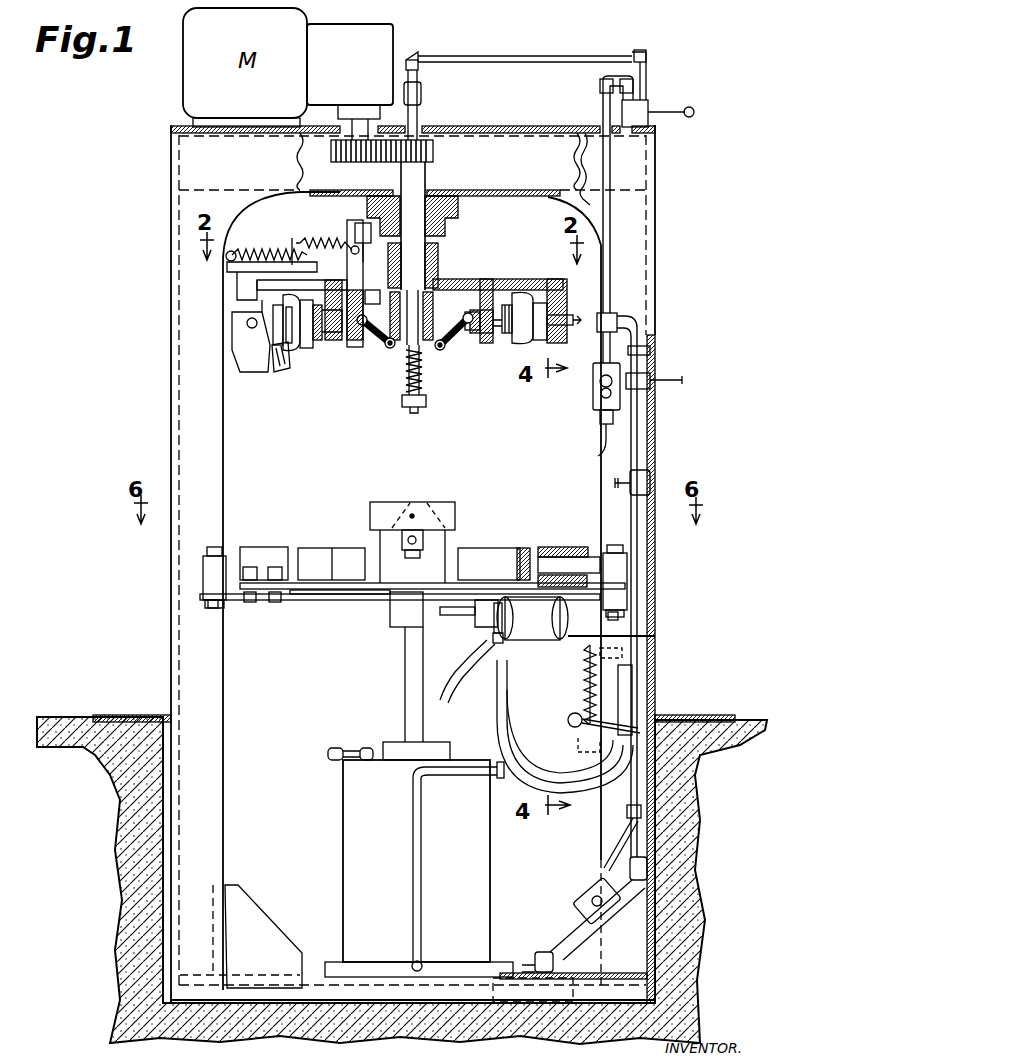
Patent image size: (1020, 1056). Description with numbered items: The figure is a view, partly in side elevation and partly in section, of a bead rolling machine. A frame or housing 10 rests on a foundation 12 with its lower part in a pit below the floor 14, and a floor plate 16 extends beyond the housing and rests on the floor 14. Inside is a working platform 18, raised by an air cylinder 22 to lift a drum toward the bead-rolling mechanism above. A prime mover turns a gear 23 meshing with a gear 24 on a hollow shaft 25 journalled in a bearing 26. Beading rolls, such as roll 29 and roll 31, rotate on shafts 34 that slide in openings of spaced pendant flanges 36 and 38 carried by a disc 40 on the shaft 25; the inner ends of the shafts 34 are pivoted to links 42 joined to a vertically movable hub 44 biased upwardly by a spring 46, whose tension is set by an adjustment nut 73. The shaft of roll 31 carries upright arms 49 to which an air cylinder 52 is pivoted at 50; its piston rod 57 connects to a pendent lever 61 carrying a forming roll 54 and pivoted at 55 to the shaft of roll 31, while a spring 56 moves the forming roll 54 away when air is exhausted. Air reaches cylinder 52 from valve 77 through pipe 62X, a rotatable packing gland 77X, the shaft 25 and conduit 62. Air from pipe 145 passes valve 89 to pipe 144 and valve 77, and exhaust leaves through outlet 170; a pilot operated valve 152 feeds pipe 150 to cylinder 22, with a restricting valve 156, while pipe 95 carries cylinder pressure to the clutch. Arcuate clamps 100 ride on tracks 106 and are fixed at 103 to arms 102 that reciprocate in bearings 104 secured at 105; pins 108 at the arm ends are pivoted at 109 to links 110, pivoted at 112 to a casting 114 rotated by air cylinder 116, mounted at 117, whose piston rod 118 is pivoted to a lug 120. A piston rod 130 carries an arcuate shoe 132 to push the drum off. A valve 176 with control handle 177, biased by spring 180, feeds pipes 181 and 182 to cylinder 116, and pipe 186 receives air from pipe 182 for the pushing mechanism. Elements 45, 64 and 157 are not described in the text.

The frame or housing 10 is at (178, 632).
The foundation 12 is at (68, 730).
The floor 14 is at (88, 717).
The floor plate 16 is at (112, 717).
The working platform 18 is at (360, 596).
The air cylinder 22 is at (384, 855).
The gear 23 is at (342, 150).
The gear 24 is at (421, 140).
The hollow shaft 25 is at (415, 180).
The bearing 26 is at (446, 218).
The beading roll 29 is at (523, 317).
The beading roll 31 is at (307, 322).
The shafts 34 is at (485, 284).
The pendant flange 36 is at (566, 300).
The pendant flange 38 is at (345, 345).
The disc 40 is at (505, 284).
The links 42 is at (375, 345).
The vertically movable hub 44 is at (430, 318).
The roller 45 is at (325, 343).
The spring 46 is at (525, 340).
The upright arms 49 is at (375, 300).
The pivot 50 is at (352, 240).
The air cylinder 52 is at (300, 240).
The forming roll 54 is at (272, 370).
The pivot 55 is at (245, 318).
The spring 56 is at (270, 250).
The piston rod 57 is at (240, 268).
The pendent lever 61 is at (245, 348).
The pipe or conduit 62 is at (438, 253).
The pipe 62X is at (575, 52).
The roller 64 is at (285, 378).
The adjustment nut 73 is at (405, 400).
The valve 77 is at (648, 108).
The rotatable packing gland 77X is at (421, 97).
The valve 89 is at (592, 400).
The pipe 95 is at (422, 855).
The arcuate clamps 100 is at (337, 550).
The actuating arms 102 is at (225, 548).
The securing point 103 is at (523, 550).
The bearings 104 is at (263, 548).
The securing point 105 is at (272, 568).
The elongated tracks 106 is at (340, 590).
The pins 108 is at (205, 595).
The pivot 109 is at (210, 604).
The links 110 is at (318, 600).
The pivot 112 is at (465, 618).
The casting 114 is at (400, 615).
The air cylinder 116 is at (532, 618).
The pivot mounting 117 is at (655, 636).
The piston rod 118 is at (500, 632).
The lug or ear 120 is at (445, 660).
The piston rod 130 is at (410, 515).
The arcuate shoe 132 is at (445, 507).
The pipe 144 is at (612, 262).
The pipe 145 is at (682, 380).
The pipe 150 is at (641, 430).
The pilot operated valve 152 is at (580, 895).
The restricting valve 156 is at (648, 482).
The fitting 157 is at (648, 350).
The exhaust outlet 170 is at (598, 425).
The valve 176 is at (632, 690).
The control handle 177 is at (570, 722).
The spring 180 is at (582, 660).
The pipe 181 is at (580, 690).
The pipe 182 is at (525, 790).
The pipe 186 is at (440, 695).